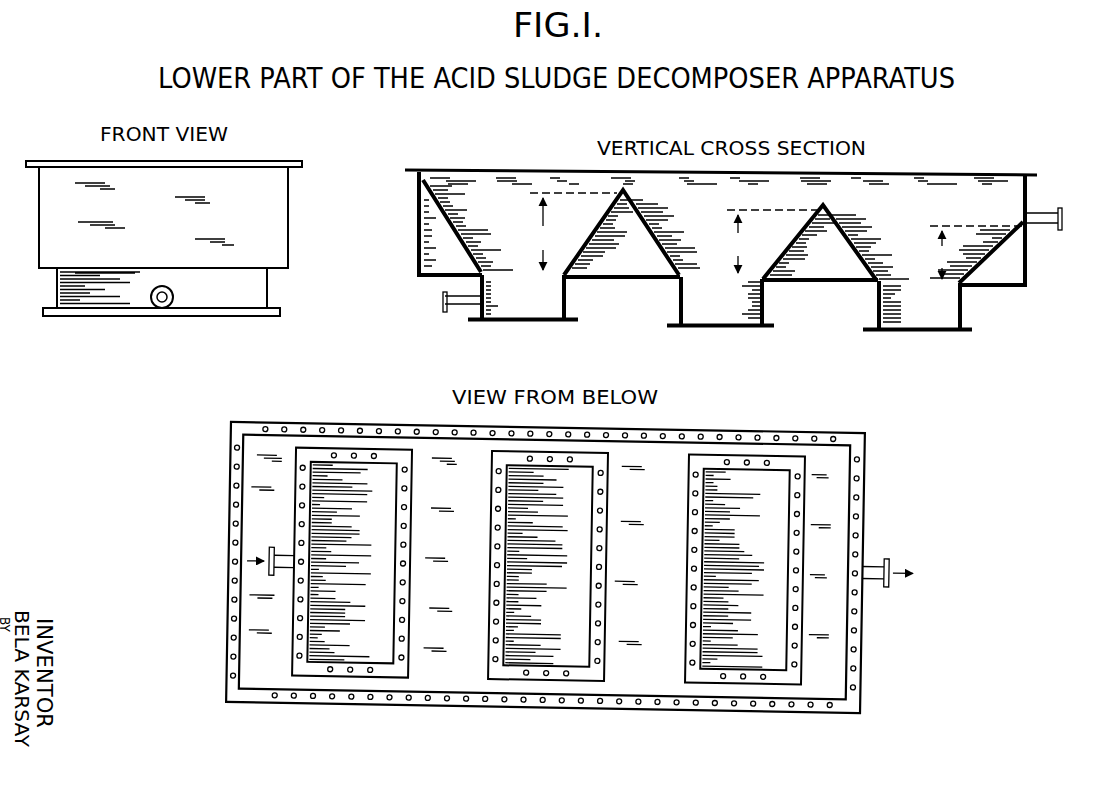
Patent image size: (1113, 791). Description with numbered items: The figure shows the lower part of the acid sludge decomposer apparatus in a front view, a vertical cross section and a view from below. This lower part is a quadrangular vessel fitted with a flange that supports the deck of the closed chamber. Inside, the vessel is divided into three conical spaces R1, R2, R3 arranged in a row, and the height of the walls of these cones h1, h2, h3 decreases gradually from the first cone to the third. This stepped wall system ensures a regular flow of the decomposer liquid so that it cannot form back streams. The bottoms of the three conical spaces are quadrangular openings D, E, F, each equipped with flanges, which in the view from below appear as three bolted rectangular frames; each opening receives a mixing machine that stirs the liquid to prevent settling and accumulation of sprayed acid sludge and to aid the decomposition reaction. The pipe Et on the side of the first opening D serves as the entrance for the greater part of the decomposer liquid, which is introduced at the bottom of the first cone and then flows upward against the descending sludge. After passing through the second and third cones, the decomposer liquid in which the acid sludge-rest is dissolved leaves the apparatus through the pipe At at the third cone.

The entrance pipe Et is at (438, 299).
The outlet pipe At is at (1090, 218).
The first quadrangular opening D is at (342, 712).
The second quadrangular opening E is at (550, 715).
The third quadrangular opening F is at (739, 720).
The first conical space R1 is at (561, 209).
The second conical space R2 is at (754, 216).
The third conical space R3 is at (957, 219).
The wall height of first cone h1 is at (546, 234).
The wall height of second cone h2 is at (739, 244).
The wall height of third cone h3 is at (944, 255).